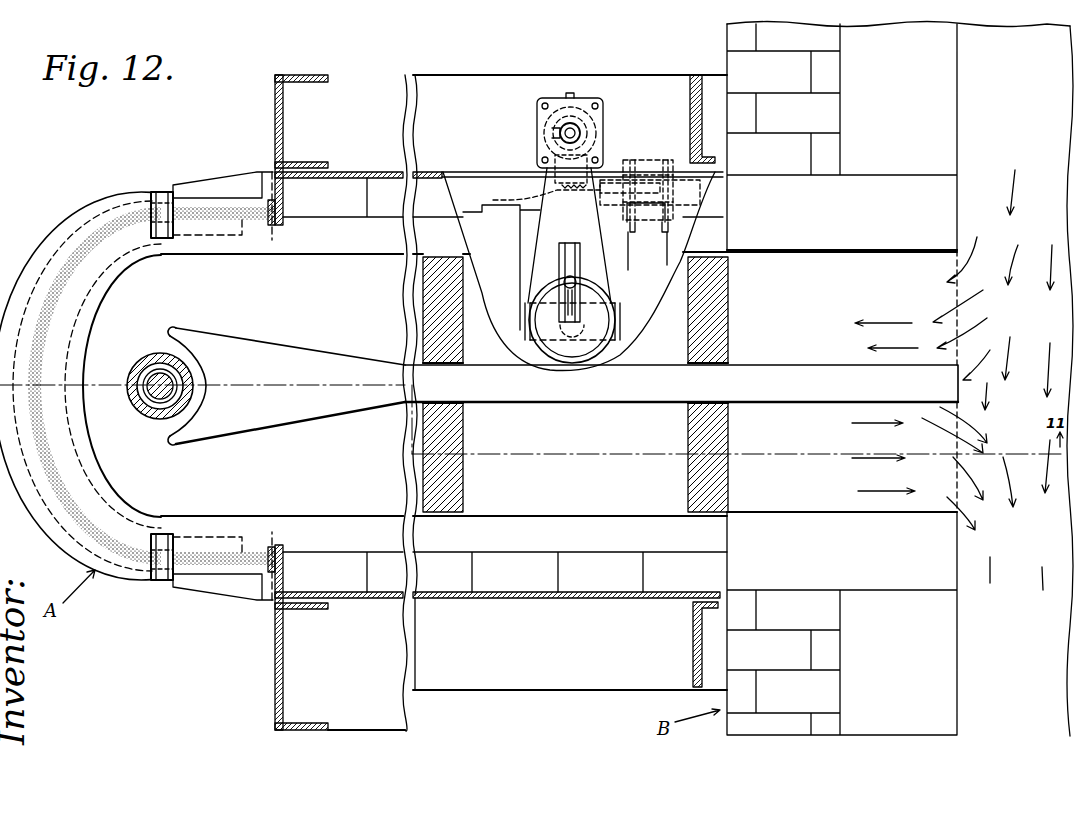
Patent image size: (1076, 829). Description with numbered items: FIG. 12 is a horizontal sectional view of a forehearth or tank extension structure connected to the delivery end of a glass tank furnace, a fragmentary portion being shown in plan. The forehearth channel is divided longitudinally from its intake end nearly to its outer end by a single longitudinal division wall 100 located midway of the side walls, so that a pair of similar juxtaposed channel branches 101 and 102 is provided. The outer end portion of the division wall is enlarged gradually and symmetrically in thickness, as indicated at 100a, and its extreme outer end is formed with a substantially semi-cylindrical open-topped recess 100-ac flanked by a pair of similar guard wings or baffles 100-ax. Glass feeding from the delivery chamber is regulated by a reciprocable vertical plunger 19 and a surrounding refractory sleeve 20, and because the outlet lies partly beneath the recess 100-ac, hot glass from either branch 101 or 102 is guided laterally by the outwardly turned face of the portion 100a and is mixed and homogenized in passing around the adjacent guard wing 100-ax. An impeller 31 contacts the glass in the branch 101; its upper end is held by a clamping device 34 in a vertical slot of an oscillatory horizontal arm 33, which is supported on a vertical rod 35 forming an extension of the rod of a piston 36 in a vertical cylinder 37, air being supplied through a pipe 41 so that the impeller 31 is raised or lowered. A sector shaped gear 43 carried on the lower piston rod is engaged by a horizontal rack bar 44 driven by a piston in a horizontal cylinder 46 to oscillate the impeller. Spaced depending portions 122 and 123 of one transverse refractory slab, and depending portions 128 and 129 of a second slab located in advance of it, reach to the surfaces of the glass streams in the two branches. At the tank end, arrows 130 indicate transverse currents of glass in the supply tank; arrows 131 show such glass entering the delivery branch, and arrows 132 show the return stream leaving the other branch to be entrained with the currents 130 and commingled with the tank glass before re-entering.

The plunger 19 is at (132, 366).
The sleeve 20 is at (135, 410).
The impeller 31 is at (580, 337).
The arm 33 is at (560, 215).
The clamping device 34 is at (577, 282).
The rod 35 is at (578, 133).
The piston 36 is at (547, 127).
The cylinder 37 is at (533, 148).
The pipe 41 is at (572, 95).
The sector shaped gear 43 is at (540, 170).
The rack bar 44 is at (574, 190).
The horizontal cylinder 46 is at (622, 168).
The division wall 100 is at (740, 378).
The enlarged outer end portion of division wall 100a is at (290, 386).
The recess 100-ac is at (200, 375).
The guard wing 100-ax is at (172, 329).
The channel branch 101 is at (343, 280).
The channel branch 102 is at (343, 484).
The depending portion 122 is at (727, 315).
The depending portion 123 is at (728, 466).
The depending portion 128 is at (427, 345).
The depending portion 129 is at (450, 447).
The transverse currents 130 is at (1010, 485).
The arrows indicating glass entering delivery branch 131 is at (950, 315).
The arrows indicating return stream 132 is at (955, 460).